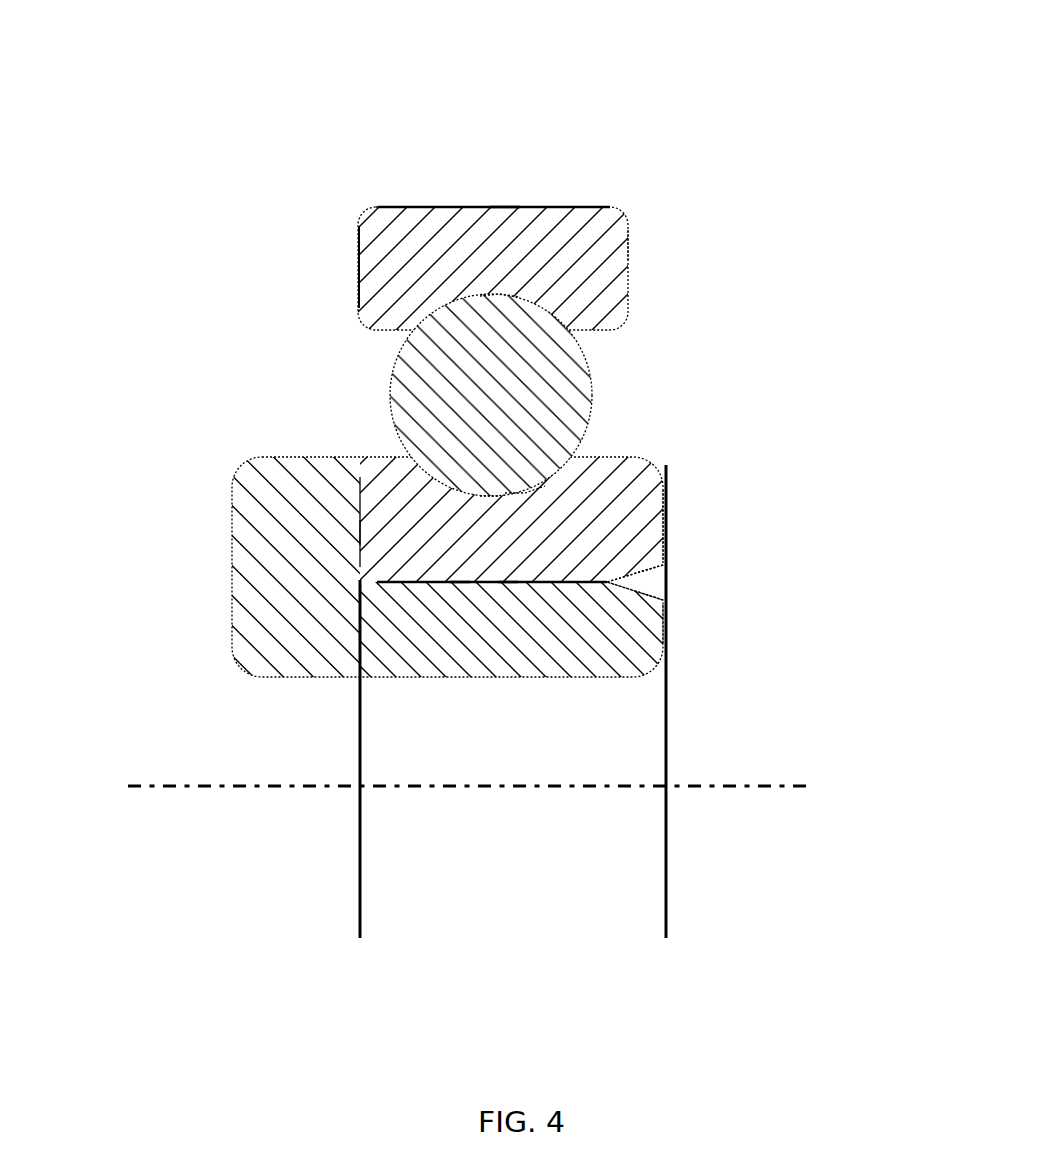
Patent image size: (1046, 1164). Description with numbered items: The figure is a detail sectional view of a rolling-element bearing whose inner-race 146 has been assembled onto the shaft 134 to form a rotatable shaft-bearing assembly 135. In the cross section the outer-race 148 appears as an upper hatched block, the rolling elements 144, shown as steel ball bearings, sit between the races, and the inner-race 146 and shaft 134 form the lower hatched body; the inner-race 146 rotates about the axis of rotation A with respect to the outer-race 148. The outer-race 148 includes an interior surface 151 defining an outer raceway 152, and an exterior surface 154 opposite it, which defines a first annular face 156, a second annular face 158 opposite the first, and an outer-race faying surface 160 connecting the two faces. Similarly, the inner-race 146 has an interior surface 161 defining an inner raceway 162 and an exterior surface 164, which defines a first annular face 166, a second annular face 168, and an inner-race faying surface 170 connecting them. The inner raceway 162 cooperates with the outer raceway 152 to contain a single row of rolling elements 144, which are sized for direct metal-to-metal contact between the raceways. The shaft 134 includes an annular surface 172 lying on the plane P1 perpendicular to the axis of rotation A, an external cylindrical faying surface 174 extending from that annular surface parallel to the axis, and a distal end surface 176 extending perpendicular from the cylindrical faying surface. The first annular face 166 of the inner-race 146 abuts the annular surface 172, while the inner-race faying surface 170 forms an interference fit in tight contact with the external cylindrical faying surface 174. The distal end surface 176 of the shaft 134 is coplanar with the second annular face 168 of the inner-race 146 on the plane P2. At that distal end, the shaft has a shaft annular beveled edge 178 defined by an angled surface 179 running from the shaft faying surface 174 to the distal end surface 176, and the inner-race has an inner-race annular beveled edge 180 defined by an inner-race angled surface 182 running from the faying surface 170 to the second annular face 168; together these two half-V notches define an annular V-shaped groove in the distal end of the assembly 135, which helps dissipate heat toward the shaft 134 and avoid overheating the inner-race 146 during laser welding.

The shaft 134 is at (268, 620).
The rotatable shaft-bearing assembly 135 is at (738, 348).
The rolling elements 144 is at (428, 395).
The inner-race 146 is at (390, 495).
The outer-race 148 is at (415, 207).
The interior surface 151 is at (514, 305).
The outer raceway 152 is at (510, 295).
The exterior surface 154 is at (476, 205).
The first annular face 156 is at (352, 272).
The second annular face 158 is at (632, 243).
The outer-race faying surface 160 is at (505, 205).
The interior surface 161 is at (514, 490).
The inner raceway 162 is at (535, 489).
The exterior surface 164 is at (460, 587).
The first annular face 166 is at (352, 550).
The second annular face 168 is at (668, 523).
The inner-race faying surface 170 is at (508, 583).
The annular surface 172 is at (365, 533).
The external cylindrical faying surface 174 is at (416, 578).
The distal end surface 176 is at (668, 642).
The shaft annular beveled edge 178 is at (640, 593).
The angled surface 179 is at (649, 595).
The inner-race annular beveled edge 180 is at (638, 571).
The inner-race angled surface 182 is at (649, 569).
The axis of rotation A is at (172, 800).
The plane P1 is at (349, 873).
The plane P2 is at (673, 888).